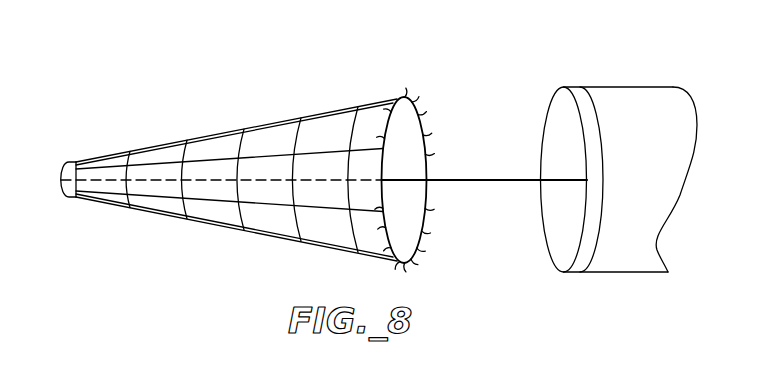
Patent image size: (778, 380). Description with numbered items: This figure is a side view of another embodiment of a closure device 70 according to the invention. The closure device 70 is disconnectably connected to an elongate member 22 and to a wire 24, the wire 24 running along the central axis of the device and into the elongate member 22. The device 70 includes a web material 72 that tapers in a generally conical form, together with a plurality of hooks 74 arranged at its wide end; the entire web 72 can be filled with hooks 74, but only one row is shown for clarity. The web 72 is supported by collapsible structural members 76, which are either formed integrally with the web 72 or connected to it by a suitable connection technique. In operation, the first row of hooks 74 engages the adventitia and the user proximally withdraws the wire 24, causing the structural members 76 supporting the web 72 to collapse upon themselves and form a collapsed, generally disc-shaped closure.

The closure device 70 is at (335, 80).
The web material 72 is at (205, 145).
The hooks 74 is at (417, 100).
The collapsible structural members 76 is at (142, 165).
The wire 24 is at (467, 177).
The elongate member 22 is at (607, 87).